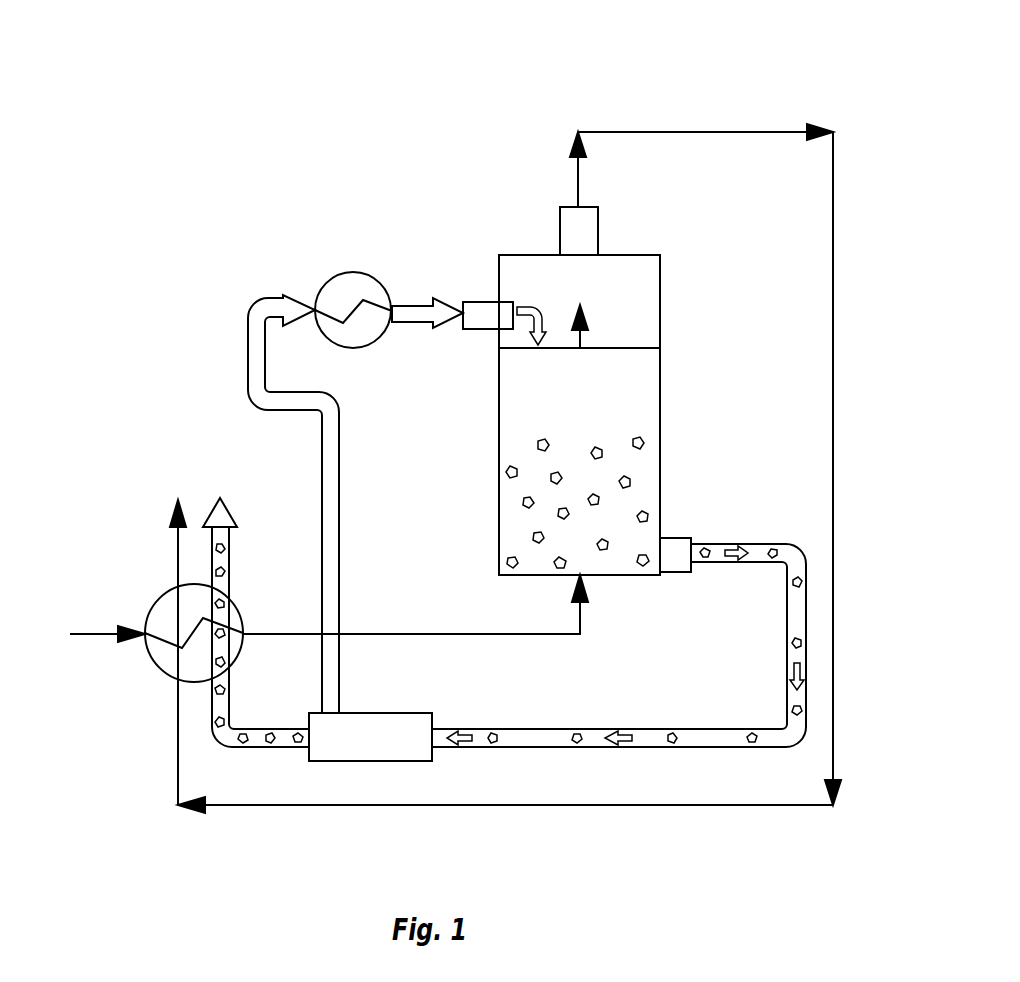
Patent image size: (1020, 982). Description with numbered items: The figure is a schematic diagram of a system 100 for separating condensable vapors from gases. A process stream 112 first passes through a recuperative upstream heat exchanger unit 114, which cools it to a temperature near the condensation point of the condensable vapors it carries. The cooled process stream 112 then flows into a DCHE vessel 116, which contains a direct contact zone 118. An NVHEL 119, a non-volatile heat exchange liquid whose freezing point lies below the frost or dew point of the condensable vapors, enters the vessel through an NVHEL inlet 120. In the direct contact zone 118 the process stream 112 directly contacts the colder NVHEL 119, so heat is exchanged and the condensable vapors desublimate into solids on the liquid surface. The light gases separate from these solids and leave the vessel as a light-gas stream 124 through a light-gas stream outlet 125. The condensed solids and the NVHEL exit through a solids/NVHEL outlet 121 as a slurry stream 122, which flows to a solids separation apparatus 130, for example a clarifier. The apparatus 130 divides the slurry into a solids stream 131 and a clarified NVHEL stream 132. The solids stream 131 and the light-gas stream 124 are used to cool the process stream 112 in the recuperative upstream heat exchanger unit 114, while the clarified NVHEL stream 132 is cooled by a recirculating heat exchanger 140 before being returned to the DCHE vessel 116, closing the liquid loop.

The system 100 is at (269, 64).
The process stream 112 is at (105, 633).
The recuperative upstream heat exchanger unit 114 is at (163, 603).
The DCHE vessel 116 is at (661, 300).
The direct contact zone 118 is at (517, 427).
The NVHEL 119 is at (418, 310).
The NVHEL inlet 120 is at (483, 331).
The solids/NVHEL outlet 121 is at (679, 572).
The slurry stream 122 is at (797, 610).
The light-gas stream 124 is at (696, 132).
The light-gas stream outlet 125 is at (598, 226).
The solids separation apparatus 130 is at (372, 761).
The solids stream 131 is at (257, 740).
The clarified NVHEL stream 132 is at (257, 363).
The recirculating heat exchanger 140 is at (337, 275).